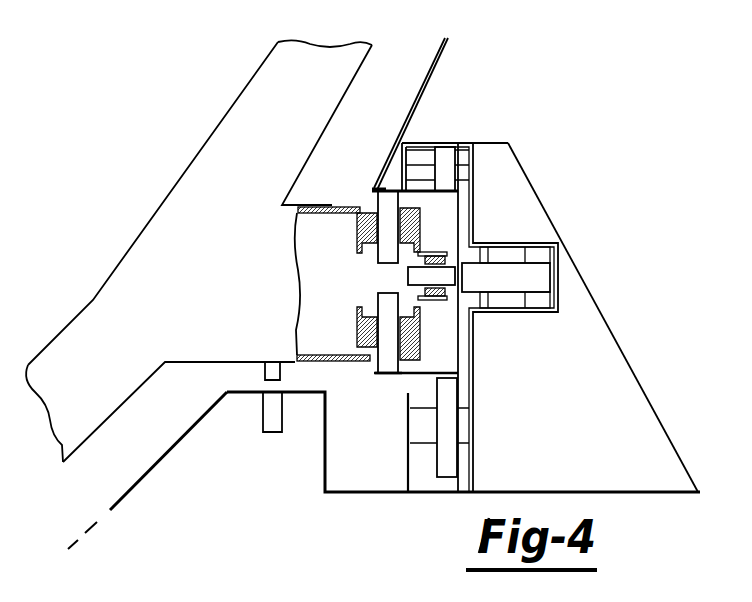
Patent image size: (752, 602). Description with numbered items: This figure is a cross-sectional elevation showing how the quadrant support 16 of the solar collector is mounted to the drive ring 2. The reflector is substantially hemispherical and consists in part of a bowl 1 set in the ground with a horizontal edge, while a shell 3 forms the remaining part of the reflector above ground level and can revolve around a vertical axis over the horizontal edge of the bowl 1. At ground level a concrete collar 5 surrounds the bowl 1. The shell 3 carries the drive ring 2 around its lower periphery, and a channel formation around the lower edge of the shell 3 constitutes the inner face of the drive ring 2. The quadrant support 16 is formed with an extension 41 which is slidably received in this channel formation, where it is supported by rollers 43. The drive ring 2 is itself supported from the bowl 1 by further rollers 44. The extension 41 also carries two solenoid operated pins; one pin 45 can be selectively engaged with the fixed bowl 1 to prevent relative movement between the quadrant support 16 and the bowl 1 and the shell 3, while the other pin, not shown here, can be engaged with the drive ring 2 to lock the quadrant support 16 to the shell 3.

The bowl 1 is at (123, 495).
The drive ring 2 is at (460, 218).
The shell 3 is at (450, 48).
The concrete collar 5 is at (268, 414).
The quadrant support 16 is at (238, 115).
The extension 41 is at (330, 205).
The rollers 43 is at (380, 218).
The rollers 44 is at (450, 165).
The pin 45 is at (276, 378).